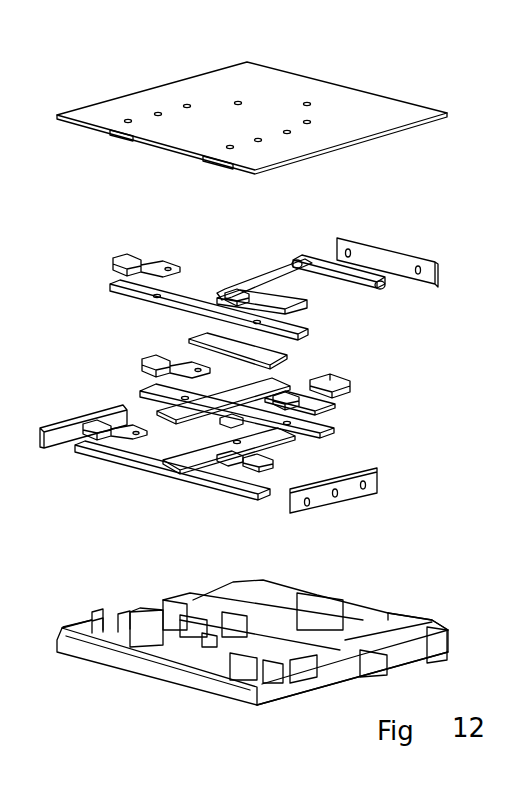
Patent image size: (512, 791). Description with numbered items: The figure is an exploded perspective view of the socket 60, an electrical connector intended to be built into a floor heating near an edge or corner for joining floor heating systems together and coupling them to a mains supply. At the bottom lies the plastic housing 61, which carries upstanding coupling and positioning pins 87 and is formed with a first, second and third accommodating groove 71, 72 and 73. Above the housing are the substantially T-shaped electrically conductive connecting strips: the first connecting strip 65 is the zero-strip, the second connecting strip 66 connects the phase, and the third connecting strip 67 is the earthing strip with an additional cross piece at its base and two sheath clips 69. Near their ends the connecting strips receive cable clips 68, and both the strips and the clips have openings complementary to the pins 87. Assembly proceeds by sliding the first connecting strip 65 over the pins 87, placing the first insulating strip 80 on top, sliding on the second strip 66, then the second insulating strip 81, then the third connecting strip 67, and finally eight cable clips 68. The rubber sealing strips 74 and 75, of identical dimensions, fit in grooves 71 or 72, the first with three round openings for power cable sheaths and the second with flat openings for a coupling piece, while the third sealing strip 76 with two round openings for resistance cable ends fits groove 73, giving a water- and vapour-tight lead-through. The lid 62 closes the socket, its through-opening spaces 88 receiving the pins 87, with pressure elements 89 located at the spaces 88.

The socket 60 is at (398, 76).
The housing 61 is at (133, 691).
The lid 62 is at (68, 110).
The first connecting strip 65 is at (100, 453).
The second connecting strip 66 is at (152, 378).
The third connecting strip 67 is at (112, 285).
The cable clip 68 is at (137, 252).
The sheath clip 69 is at (380, 284).
The first accommodating groove 71 is at (337, 699).
The second accommodating groove 72 is at (79, 615).
The third accommodating groove 73 is at (398, 611).
The first rubber sealing strip 74 is at (378, 478).
The second rubber sealing strip 75 is at (50, 447).
The third rubber sealing strip 76 is at (442, 262).
The first insulating strip 80 is at (140, 405).
The second insulating strip 81 is at (190, 337).
The coupling and positioning pins 87 is at (130, 628).
The spaces 88 is at (128, 120).
The pressure elements 89 is at (210, 162).